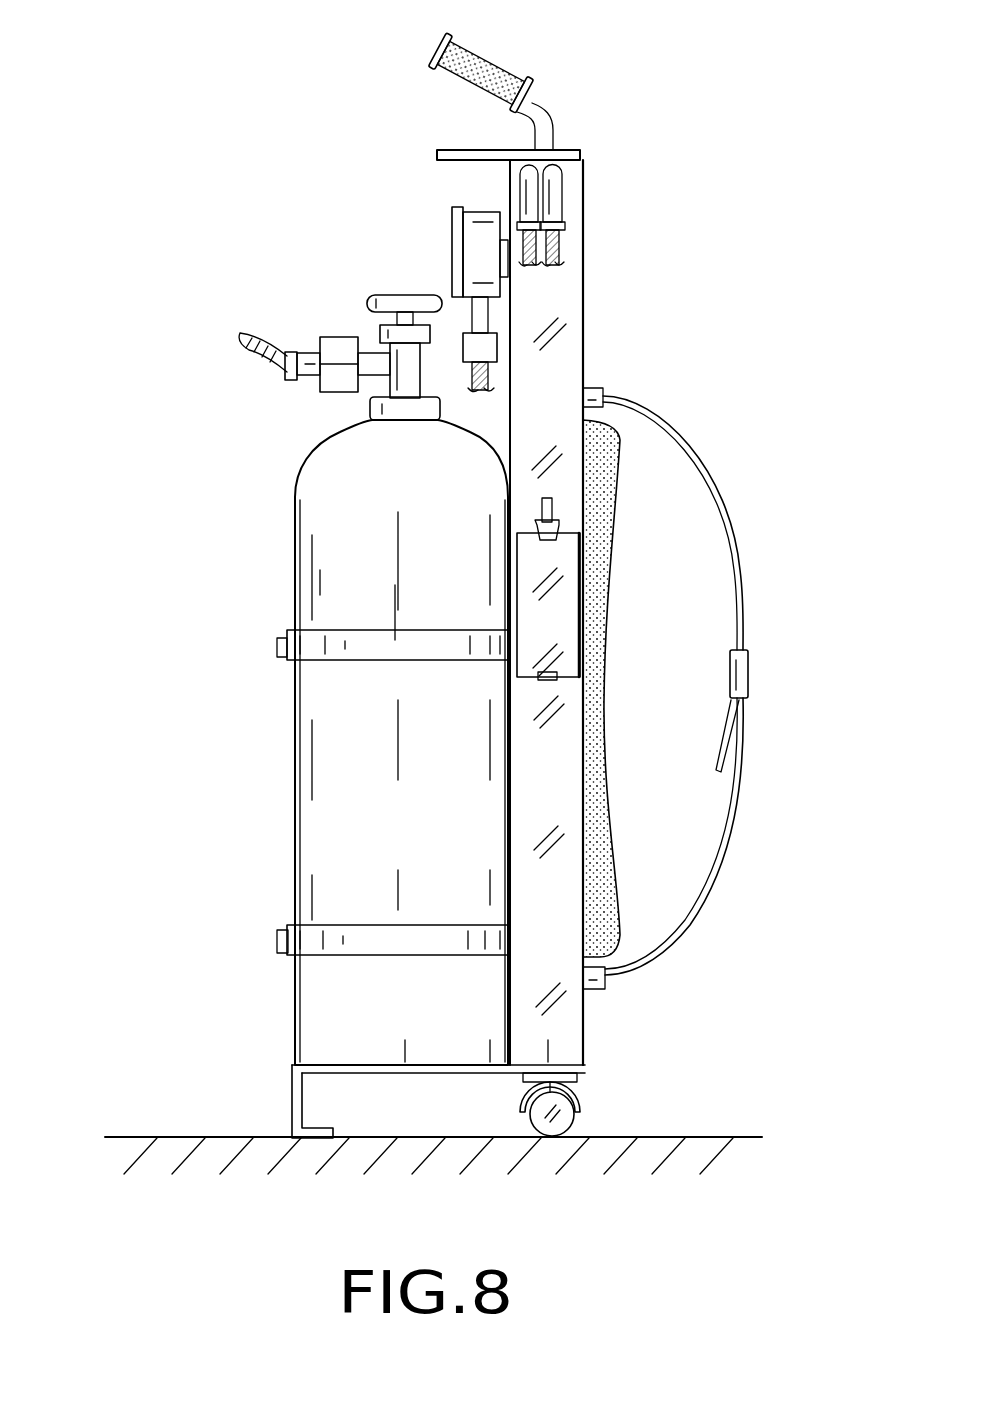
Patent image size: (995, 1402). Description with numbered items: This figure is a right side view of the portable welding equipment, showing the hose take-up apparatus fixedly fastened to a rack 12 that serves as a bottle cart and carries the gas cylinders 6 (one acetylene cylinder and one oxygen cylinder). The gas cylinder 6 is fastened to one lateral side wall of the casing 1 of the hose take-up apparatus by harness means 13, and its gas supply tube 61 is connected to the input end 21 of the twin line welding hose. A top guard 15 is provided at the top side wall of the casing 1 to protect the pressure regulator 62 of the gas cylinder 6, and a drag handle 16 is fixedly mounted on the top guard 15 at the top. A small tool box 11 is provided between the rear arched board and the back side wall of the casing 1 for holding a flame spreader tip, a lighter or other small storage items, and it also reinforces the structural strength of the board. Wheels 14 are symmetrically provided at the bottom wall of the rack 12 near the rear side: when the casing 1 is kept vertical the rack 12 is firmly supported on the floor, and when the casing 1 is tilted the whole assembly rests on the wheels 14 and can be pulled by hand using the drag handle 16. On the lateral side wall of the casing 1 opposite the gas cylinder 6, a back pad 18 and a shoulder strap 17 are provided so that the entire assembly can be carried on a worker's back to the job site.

The casing 1 is at (543, 957).
The gas cylinder 6 is at (355, 765).
The small tool box 11 is at (555, 590).
The rack 12 is at (430, 1073).
The harness means 13 is at (372, 645).
The wheel 14 is at (552, 1117).
The top guard 15 is at (468, 155).
The drag handle 16 is at (490, 67).
The shoulder strap 17 is at (735, 573).
The back pad 18 is at (590, 738).
The input end 21 is at (555, 196).
The gas supply tube 61 is at (523, 252).
The pressure regulator 62 is at (455, 213).